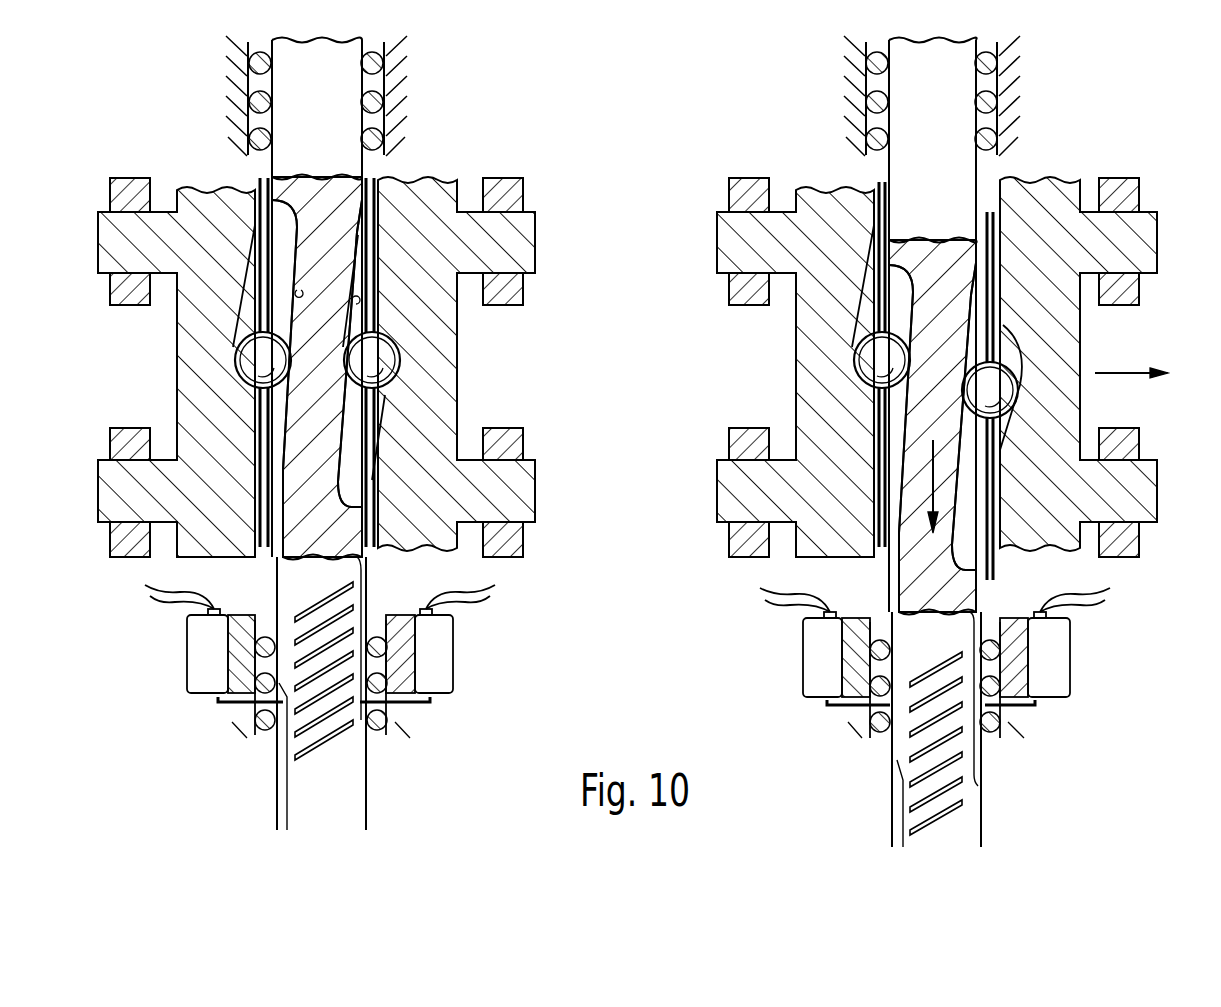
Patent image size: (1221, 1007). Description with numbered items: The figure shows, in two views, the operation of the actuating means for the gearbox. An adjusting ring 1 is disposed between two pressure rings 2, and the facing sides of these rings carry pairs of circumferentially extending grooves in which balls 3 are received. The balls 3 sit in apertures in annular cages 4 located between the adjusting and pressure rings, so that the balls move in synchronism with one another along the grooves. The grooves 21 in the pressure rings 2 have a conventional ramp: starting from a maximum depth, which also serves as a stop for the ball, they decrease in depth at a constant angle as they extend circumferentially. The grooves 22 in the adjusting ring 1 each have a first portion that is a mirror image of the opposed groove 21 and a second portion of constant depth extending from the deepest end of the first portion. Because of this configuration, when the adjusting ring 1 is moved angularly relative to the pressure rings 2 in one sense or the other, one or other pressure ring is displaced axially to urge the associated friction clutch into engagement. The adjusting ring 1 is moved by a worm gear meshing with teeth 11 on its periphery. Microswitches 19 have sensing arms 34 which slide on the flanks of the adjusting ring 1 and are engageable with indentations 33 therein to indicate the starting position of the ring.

The adjusting ring 1 is at (300, 100).
The pressure rings 2 is at (425, 220).
The balls 3 is at (375, 356).
The annular cages 4 is at (373, 425).
The teeth 11 is at (320, 752).
The microswitches 19 is at (445, 655).
The grooves 21 is at (393, 455).
The grooves 22 is at (352, 302).
The indentations 33 is at (897, 786).
The sensing arms 34 is at (990, 738).